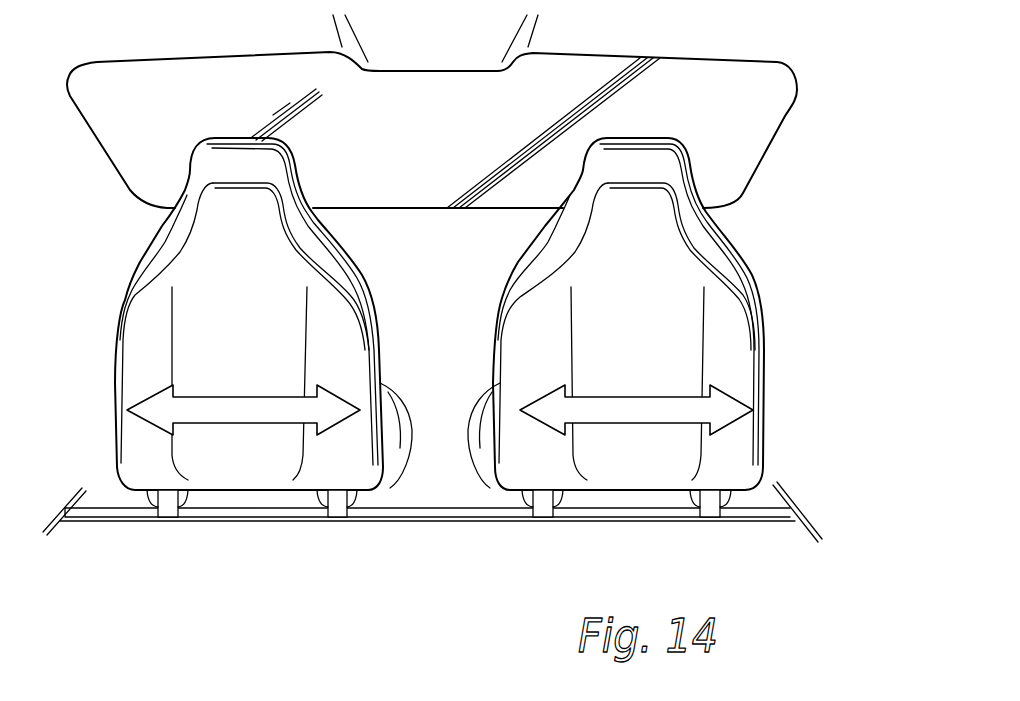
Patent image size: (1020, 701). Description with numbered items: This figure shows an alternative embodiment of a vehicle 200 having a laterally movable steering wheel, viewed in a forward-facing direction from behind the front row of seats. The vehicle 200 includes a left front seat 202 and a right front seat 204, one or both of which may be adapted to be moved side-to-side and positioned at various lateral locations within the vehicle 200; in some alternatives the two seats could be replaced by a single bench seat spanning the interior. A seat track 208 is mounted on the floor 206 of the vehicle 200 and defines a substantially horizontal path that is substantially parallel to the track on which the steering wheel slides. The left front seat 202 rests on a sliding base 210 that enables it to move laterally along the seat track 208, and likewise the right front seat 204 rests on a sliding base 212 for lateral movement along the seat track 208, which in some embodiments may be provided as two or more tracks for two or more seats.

The vehicle 200 is at (438, 327).
The left front seat 202 is at (150, 330).
The right front seat 204 is at (670, 363).
The floor 206 is at (470, 528).
The seat track 208 is at (428, 513).
The sliding base 210 is at (166, 500).
The sliding base 212 is at (545, 503).